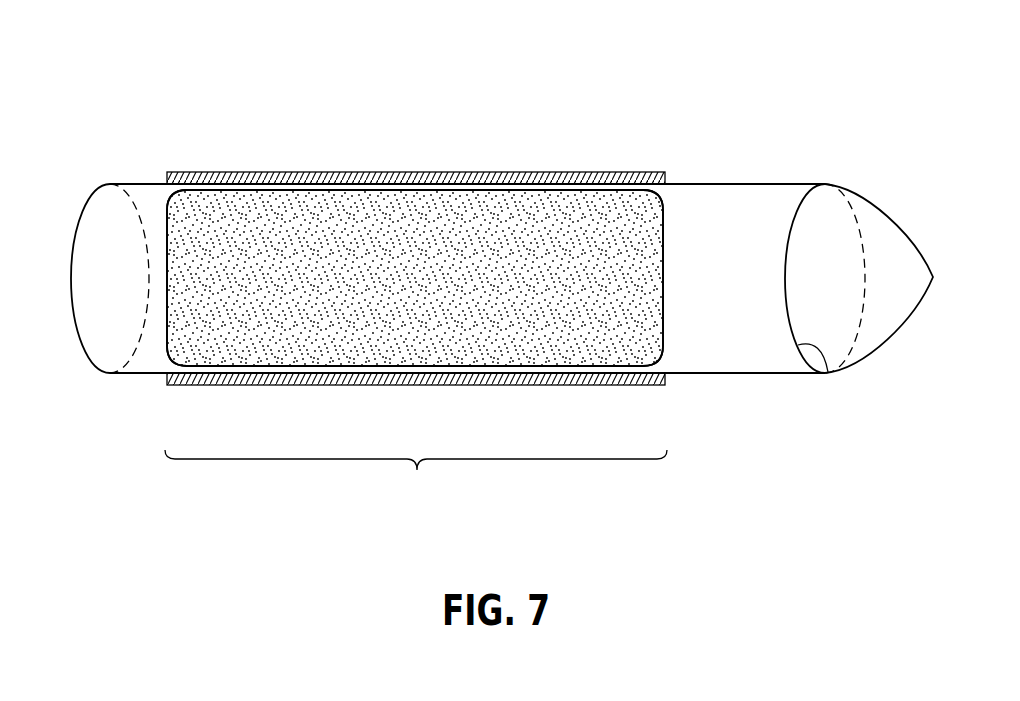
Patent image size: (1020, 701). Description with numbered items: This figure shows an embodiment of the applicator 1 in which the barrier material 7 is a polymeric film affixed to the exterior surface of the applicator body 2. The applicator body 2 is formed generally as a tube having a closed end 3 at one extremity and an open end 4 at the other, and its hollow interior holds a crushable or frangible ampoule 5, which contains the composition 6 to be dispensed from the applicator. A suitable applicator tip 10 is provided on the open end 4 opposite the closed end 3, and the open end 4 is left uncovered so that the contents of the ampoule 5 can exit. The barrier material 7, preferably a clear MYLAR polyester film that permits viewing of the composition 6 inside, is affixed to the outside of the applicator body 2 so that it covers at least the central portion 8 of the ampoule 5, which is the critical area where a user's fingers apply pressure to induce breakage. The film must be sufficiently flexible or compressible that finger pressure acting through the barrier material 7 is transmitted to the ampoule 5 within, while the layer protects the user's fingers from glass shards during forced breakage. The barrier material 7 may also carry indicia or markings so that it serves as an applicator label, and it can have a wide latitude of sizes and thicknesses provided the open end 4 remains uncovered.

The applicator 1 is at (447, 108).
The applicator body 2 is at (730, 358).
The closed end 3 is at (77, 333).
The open end 4 is at (826, 372).
The crushable ampoule 5 is at (475, 352).
The composition 6 is at (415, 278).
The barrier material 7 is at (315, 384).
The central portion 8 is at (416, 478).
The applicator tip 10 is at (885, 203).